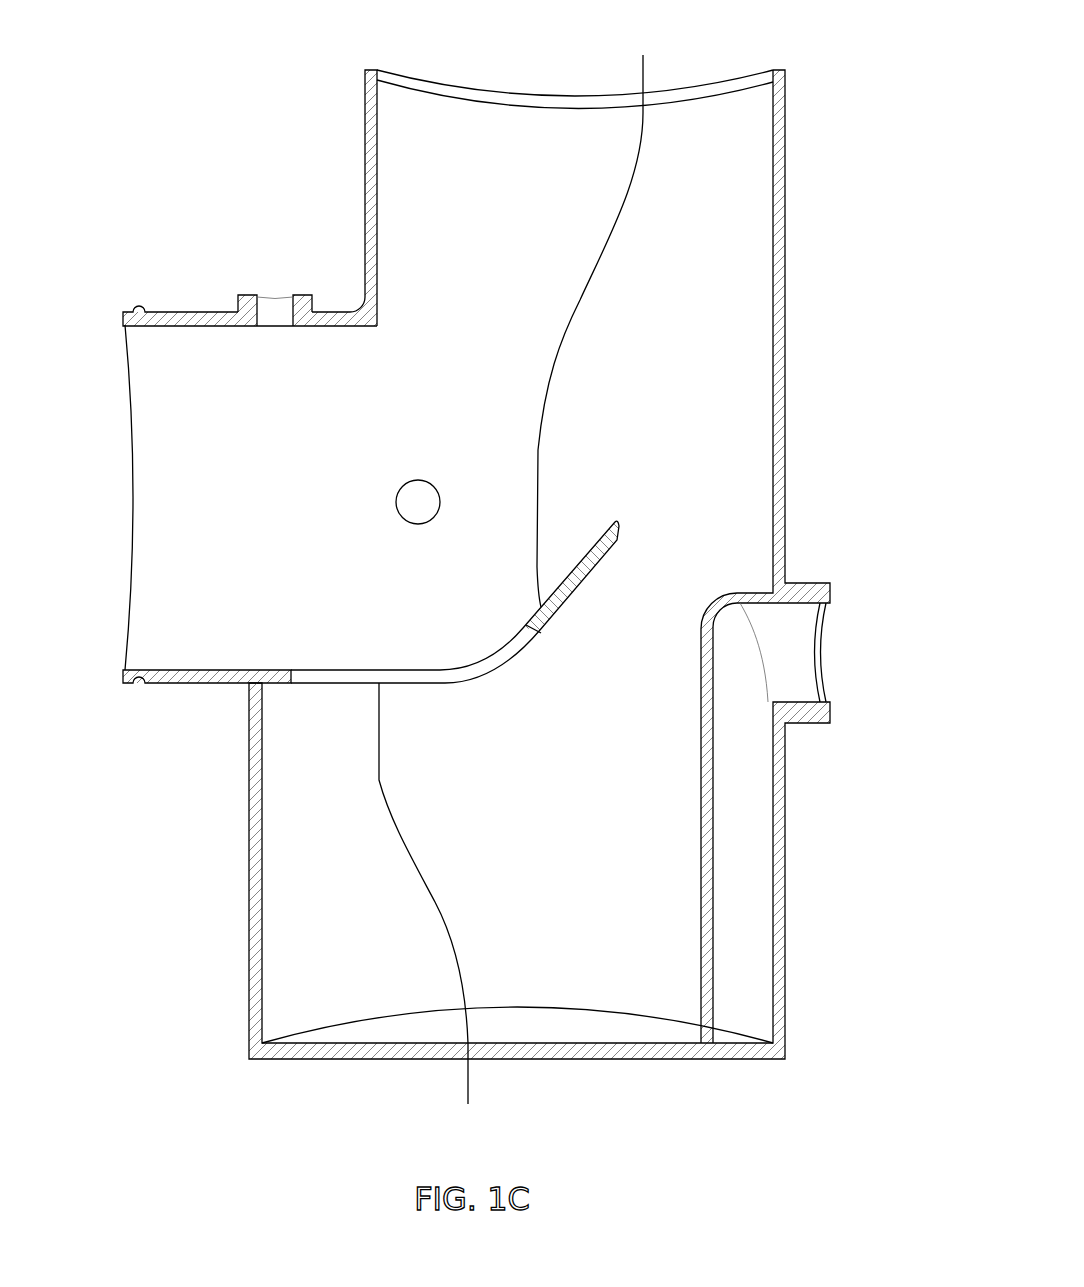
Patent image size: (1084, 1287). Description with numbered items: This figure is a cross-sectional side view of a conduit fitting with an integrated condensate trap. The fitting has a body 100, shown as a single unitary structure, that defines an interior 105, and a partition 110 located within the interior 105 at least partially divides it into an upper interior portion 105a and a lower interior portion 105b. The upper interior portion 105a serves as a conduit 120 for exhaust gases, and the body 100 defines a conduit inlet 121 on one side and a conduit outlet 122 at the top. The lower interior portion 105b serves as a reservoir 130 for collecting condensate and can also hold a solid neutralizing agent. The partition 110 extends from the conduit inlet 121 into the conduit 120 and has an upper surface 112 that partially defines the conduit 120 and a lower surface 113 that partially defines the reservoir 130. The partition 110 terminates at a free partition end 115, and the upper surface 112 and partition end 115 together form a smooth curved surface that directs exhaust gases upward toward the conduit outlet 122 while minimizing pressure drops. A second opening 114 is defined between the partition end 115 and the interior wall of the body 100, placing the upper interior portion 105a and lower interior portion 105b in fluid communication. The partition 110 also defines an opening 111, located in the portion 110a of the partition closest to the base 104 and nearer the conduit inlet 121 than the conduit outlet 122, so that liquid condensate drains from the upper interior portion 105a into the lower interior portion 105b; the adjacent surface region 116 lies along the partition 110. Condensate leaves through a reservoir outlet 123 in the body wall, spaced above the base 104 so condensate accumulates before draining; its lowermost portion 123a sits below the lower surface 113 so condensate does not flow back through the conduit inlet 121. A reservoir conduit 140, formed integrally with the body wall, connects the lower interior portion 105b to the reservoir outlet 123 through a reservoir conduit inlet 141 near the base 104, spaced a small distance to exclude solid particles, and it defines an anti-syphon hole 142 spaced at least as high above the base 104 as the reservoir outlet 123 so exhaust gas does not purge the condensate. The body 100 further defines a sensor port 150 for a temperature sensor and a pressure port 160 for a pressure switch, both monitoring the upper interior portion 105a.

The body 100 is at (780, 163).
The base 104 is at (552, 1059).
The interior 105 is at (734, 399).
The upper interior portion 105a is at (723, 292).
The lower interior portion 105b is at (295, 821).
The partition 110 is at (543, 623).
The portion of the partition closest to the base 110a is at (436, 905).
The opening 111 is at (472, 684).
The upper surface 112 is at (599, 316).
The lower surface 113 is at (278, 684).
The second opening 114 is at (734, 473).
The partition end 115 is at (615, 520).
The baffle side surface 116 is at (597, 557).
The conduit 120 is at (200, 399).
The conduit inlet 121 is at (128, 503).
The conduit outlet 122 is at (714, 78).
The reservoir outlet 123 is at (832, 661).
The lowermost portion of the reservoir outlet 123a is at (823, 715).
The reservoir 130 is at (295, 937).
The reservoir conduit 140 is at (765, 863).
The reservoir conduit inlet 141 is at (703, 1036).
The anti-syphon hole 142 is at (709, 701).
The sensor port 150 is at (396, 500).
The pressure port 160 is at (252, 295).